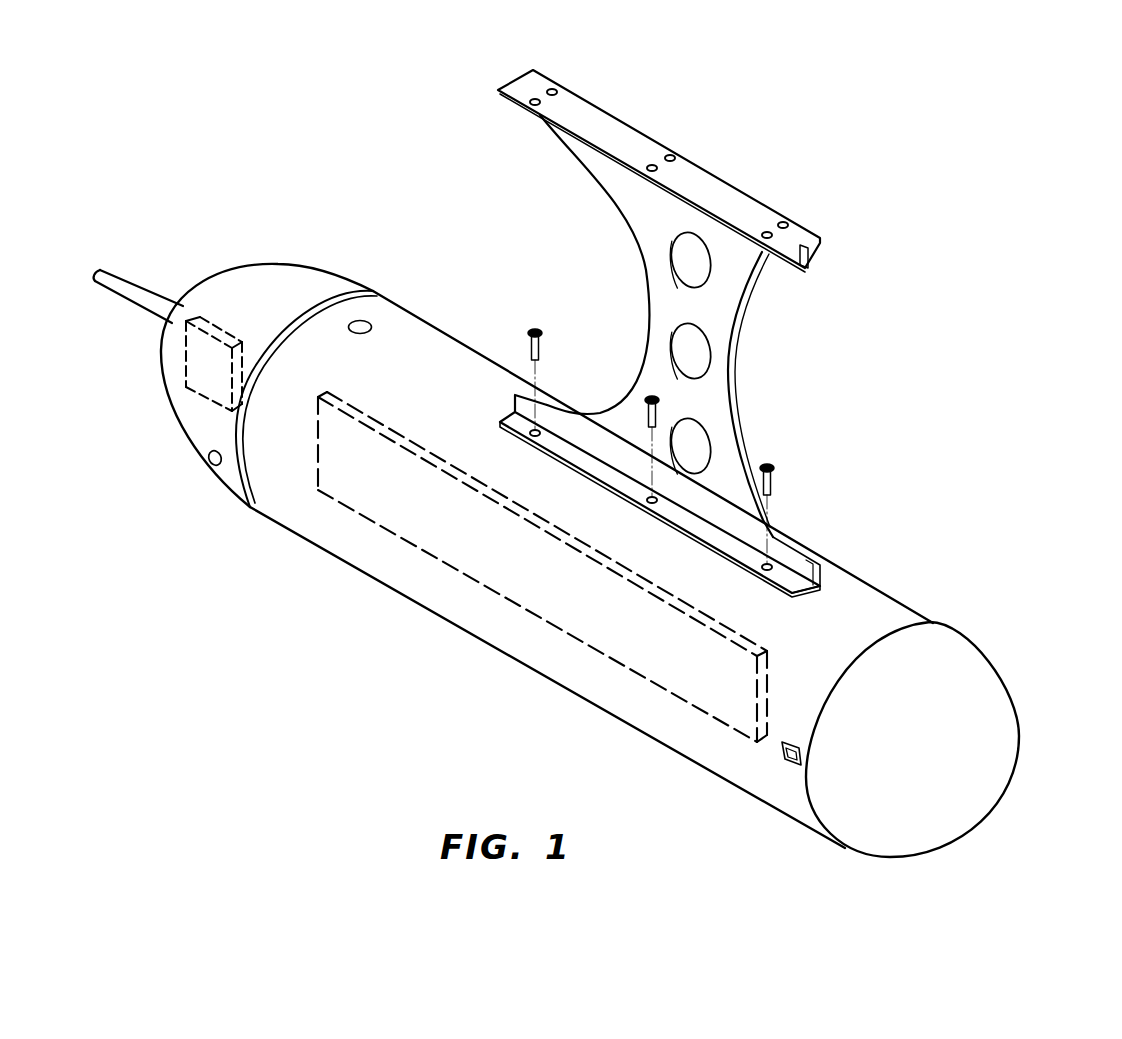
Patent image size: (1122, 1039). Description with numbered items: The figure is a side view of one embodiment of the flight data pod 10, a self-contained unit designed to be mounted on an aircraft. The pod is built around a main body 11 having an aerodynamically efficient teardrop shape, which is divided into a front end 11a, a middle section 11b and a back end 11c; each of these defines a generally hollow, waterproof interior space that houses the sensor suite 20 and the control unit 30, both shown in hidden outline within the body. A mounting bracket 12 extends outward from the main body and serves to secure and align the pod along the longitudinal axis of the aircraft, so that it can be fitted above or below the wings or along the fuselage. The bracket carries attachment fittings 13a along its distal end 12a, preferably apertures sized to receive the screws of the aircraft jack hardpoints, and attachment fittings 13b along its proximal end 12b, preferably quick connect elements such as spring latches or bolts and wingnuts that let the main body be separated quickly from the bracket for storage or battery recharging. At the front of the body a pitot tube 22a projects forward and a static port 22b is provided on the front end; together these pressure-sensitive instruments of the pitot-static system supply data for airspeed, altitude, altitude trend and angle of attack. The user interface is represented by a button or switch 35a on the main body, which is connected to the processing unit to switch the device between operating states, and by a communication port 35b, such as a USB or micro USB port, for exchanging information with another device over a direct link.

The flight data pod 10 is at (318, 210).
The main body 11 is at (157, 428).
The front end 11a is at (200, 462).
The middle section 11b is at (498, 650).
The back end 11c is at (958, 740).
The mounting bracket 12 is at (648, 313).
The distal end 12a is at (630, 141).
The proximal end 12b is at (693, 524).
The attachment fittings 13a is at (536, 100).
The attachment fittings 13b is at (535, 328).
The sensor suite 20 is at (213, 345).
The pitot tube 22a is at (119, 280).
The static port 22b is at (217, 470).
The control unit 30 is at (656, 668).
The button/switch 35a is at (363, 320).
The communication port 35b is at (789, 755).